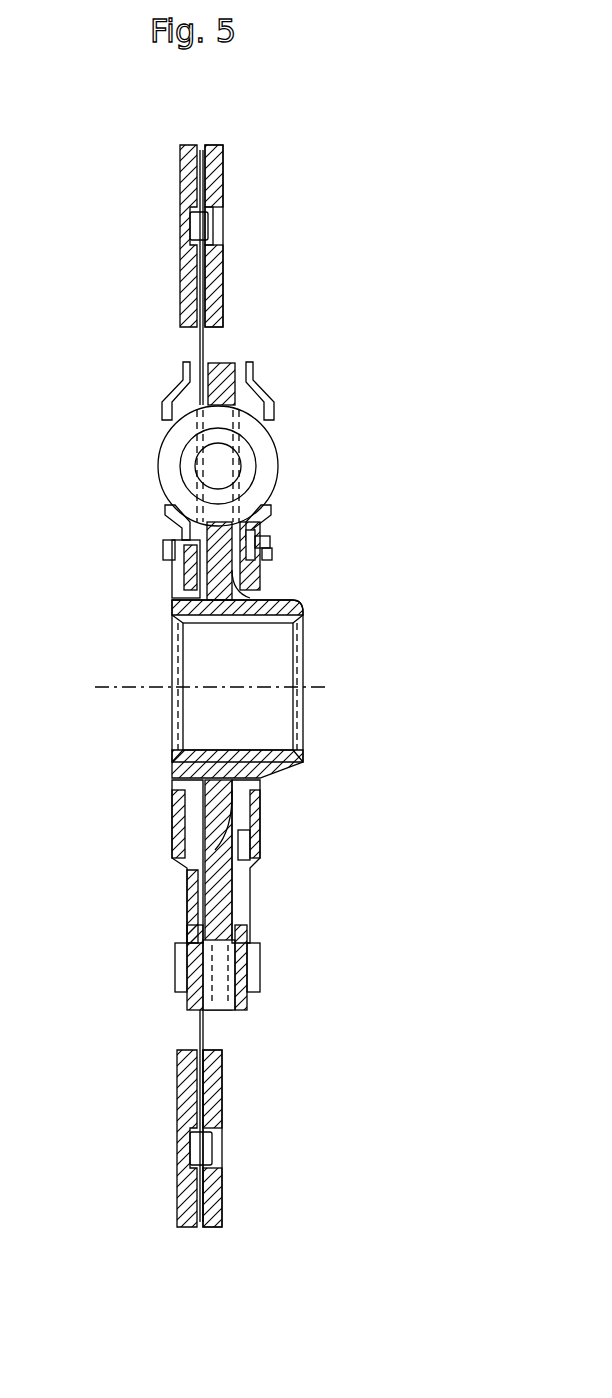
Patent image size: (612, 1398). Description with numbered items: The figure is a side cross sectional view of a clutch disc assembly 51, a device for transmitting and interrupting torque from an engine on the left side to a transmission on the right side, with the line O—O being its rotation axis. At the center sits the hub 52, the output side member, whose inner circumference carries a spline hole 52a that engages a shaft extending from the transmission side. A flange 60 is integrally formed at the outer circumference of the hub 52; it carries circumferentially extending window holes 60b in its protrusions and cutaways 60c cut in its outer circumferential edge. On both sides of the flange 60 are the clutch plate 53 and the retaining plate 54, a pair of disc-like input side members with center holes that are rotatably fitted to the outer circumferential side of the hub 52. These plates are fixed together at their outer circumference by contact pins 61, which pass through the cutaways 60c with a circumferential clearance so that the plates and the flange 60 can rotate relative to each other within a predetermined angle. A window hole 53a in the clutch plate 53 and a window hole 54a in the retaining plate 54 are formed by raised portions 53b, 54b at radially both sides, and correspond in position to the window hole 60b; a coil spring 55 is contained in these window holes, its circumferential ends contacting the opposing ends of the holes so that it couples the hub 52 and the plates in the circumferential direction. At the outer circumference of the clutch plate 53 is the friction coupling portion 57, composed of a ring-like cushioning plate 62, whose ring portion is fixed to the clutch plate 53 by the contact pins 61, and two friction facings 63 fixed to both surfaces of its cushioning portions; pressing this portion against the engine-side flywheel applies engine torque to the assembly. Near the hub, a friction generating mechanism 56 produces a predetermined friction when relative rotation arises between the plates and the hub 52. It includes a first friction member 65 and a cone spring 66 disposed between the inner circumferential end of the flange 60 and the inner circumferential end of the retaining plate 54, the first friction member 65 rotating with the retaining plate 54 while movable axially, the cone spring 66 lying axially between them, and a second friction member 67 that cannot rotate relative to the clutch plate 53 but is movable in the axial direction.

The clutch disc assembly 51 is at (402, 577).
The hub 52 is at (312, 605).
The spline hole 52a is at (237, 622).
The clutch plate 53 is at (178, 858).
The window hole 53a is at (156, 487).
The raised portions 53b is at (166, 420).
The retaining plate 54 is at (258, 862).
The window hole 54a is at (286, 449).
The raised portions 54b is at (272, 412).
The coil spring 55 is at (165, 450).
The friction generating mechanism 56 is at (283, 548).
The friction coupling portion 57 is at (243, 196).
The flange 60 is at (231, 372).
The window hole 60b is at (262, 393).
The cutaways 60c is at (222, 1000).
The contact pins 61 is at (222, 963).
The cushioning plate 62 is at (197, 355).
The friction facings 63 is at (187, 172).
The first friction member 65 is at (270, 556).
The cone spring 66 is at (268, 527).
The second friction member 67 is at (170, 558).